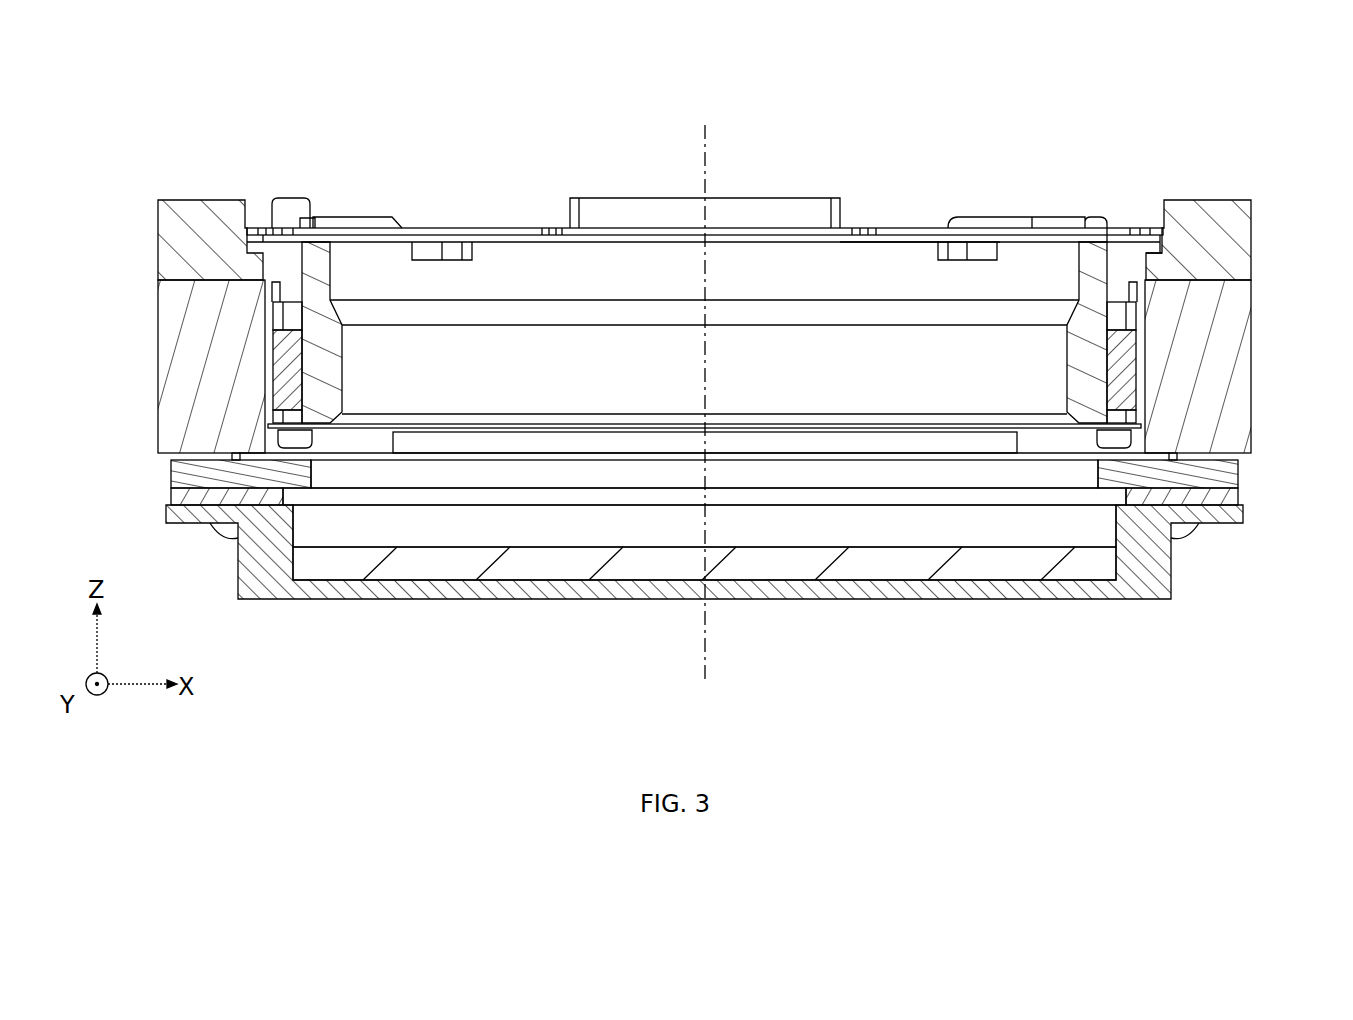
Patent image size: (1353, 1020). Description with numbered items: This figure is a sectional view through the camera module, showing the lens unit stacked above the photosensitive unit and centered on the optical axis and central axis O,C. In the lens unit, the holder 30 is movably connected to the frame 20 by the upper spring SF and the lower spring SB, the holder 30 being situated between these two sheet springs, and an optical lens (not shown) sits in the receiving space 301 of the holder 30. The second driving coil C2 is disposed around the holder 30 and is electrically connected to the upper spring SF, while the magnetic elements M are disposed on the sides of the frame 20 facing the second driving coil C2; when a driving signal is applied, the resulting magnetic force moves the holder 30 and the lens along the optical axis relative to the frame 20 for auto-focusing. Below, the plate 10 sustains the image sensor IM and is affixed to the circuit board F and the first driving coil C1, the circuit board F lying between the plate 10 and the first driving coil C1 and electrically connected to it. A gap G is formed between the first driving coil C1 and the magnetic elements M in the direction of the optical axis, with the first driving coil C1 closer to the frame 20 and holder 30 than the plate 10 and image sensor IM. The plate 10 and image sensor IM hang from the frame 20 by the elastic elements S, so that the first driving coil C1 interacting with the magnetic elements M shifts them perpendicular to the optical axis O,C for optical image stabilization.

The optical axis / central axis O,C is at (701, 382).
The upper spring SF is at (505, 228).
The receiving space 301 is at (898, 270).
The holder 30 is at (982, 240).
The frame 20 is at (1203, 242).
The magnetic elements M is at (208, 367).
The second driving coil C2 is at (1120, 367).
The elastic elements S is at (237, 453).
The first driving coil C1 is at (1210, 473).
The circuit board F is at (1227, 497).
The gap G is at (352, 447).
The image sensor IM is at (545, 562).
The lower spring SB is at (1033, 428).
The plate 10 is at (1145, 570).